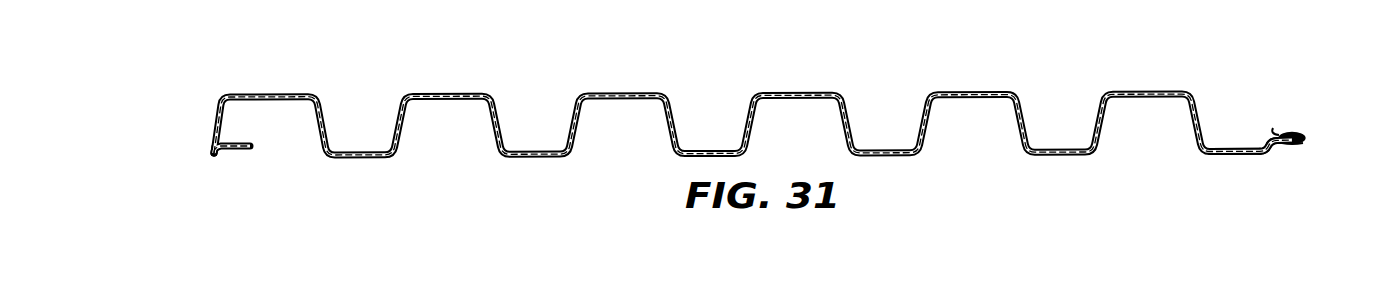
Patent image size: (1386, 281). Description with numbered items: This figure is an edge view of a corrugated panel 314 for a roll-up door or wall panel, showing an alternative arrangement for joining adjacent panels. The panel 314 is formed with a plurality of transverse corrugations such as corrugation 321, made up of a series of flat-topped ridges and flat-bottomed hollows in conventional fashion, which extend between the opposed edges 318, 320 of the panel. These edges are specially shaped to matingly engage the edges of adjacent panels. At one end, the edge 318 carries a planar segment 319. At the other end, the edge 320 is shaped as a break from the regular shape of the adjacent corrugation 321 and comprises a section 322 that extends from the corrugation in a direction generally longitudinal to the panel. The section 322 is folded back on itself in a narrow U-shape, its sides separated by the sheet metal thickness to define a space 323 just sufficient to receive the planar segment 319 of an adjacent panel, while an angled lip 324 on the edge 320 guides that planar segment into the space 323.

The corrugated panel 314 is at (640, 72).
The panel edge 318 is at (233, 165).
The planar segment 319 is at (238, 143).
The panel edge 320 is at (1289, 167).
The corrugation 321 is at (1223, 148).
The section 322 is at (1302, 145).
The space 323 is at (1295, 131).
The angled lip 324 is at (1275, 129).